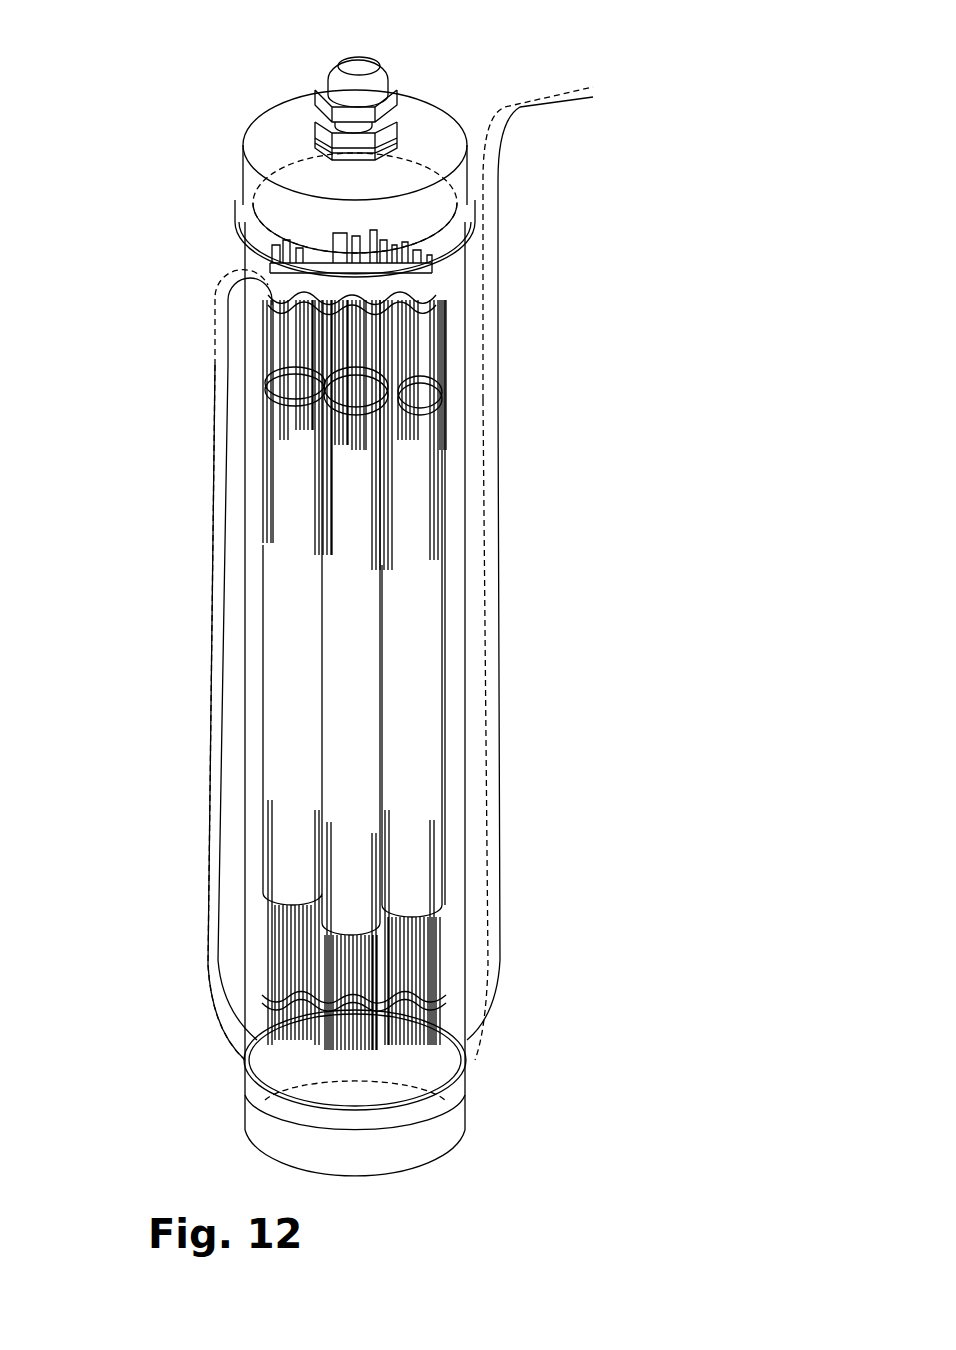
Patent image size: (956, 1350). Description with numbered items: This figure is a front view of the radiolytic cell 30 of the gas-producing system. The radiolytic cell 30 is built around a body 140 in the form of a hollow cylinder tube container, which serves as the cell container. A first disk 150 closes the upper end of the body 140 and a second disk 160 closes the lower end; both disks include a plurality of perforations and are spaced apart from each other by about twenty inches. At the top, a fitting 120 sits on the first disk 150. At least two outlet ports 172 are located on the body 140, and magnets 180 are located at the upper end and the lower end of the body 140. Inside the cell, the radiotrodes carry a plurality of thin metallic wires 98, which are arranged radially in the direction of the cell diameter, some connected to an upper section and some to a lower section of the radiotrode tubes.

The radiolytic cell 30 is at (285, 131).
The terminal nut 120 is at (367, 87).
The first disk 150 is at (458, 163).
The body 140 is at (250, 650).
The outlet ports 172 is at (227, 290).
The magnets 180 is at (245, 253).
The thin metallic wires 98 is at (287, 353).
The second disk 160 is at (450, 1123).